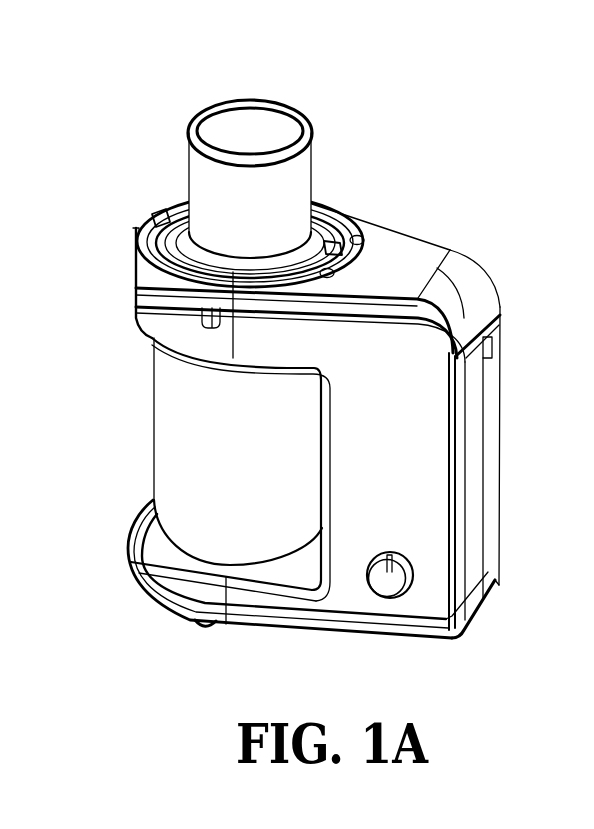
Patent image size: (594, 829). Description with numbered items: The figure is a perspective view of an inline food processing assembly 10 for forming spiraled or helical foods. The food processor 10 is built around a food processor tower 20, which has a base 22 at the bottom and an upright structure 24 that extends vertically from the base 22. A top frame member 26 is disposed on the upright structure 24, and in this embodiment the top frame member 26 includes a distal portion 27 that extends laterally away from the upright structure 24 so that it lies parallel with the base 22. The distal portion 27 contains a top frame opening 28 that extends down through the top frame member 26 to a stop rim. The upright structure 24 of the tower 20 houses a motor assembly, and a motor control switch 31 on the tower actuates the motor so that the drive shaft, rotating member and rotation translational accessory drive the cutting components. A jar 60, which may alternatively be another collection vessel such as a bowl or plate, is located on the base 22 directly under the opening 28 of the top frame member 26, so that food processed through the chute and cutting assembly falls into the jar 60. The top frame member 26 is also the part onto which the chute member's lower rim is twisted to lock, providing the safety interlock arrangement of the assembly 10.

The food processing assembly 10 is at (184, 56).
The food processor tower 20 is at (491, 577).
The base 22 is at (129, 563).
The upright structure 24 is at (496, 457).
The top frame member 26 is at (417, 259).
The distal portion 27 is at (136, 289).
The top frame opening 28 is at (163, 211).
The motor control switch 31 is at (390, 598).
The jar 60 is at (155, 453).